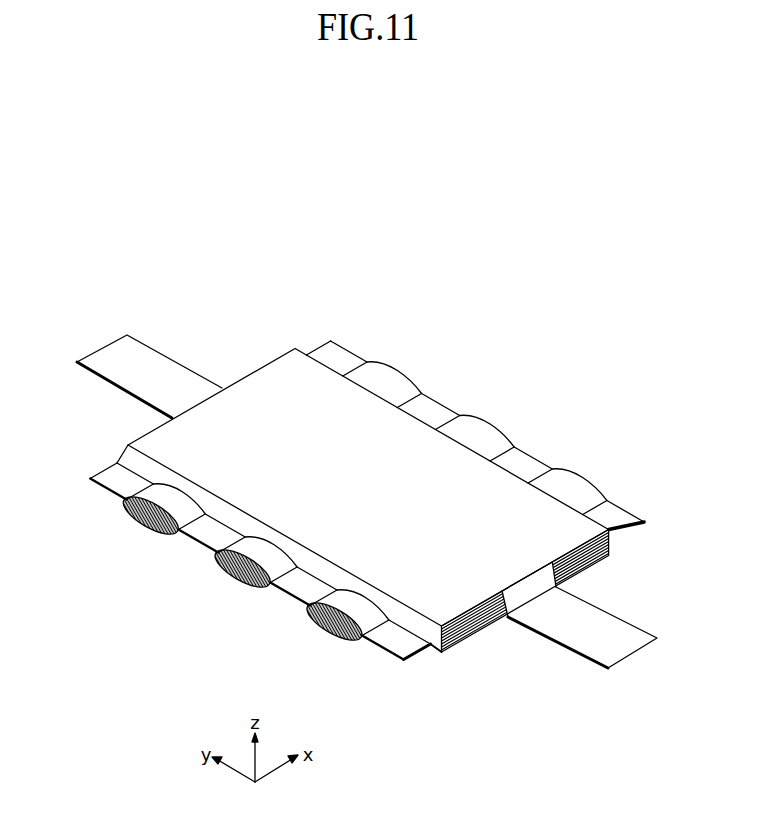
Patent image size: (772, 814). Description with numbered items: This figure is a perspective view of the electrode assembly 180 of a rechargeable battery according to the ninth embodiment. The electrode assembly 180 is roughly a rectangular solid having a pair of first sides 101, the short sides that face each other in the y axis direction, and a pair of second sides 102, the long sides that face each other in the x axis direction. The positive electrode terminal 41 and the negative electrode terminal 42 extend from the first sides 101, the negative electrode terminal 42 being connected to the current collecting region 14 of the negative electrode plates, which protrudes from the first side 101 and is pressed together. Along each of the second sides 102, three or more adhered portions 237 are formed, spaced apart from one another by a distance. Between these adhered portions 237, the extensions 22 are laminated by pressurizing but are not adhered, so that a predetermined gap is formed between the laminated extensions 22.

The electrode assembly 180 is at (486, 370).
The first sides 101 is at (262, 367).
The second sides 102 is at (560, 468).
The adhered portions 237 is at (342, 360).
The extensions 22 is at (472, 428).
The current collecting region 14 is at (522, 592).
The positive electrode terminal 41 is at (112, 352).
The negative electrode terminal 42 is at (597, 648).